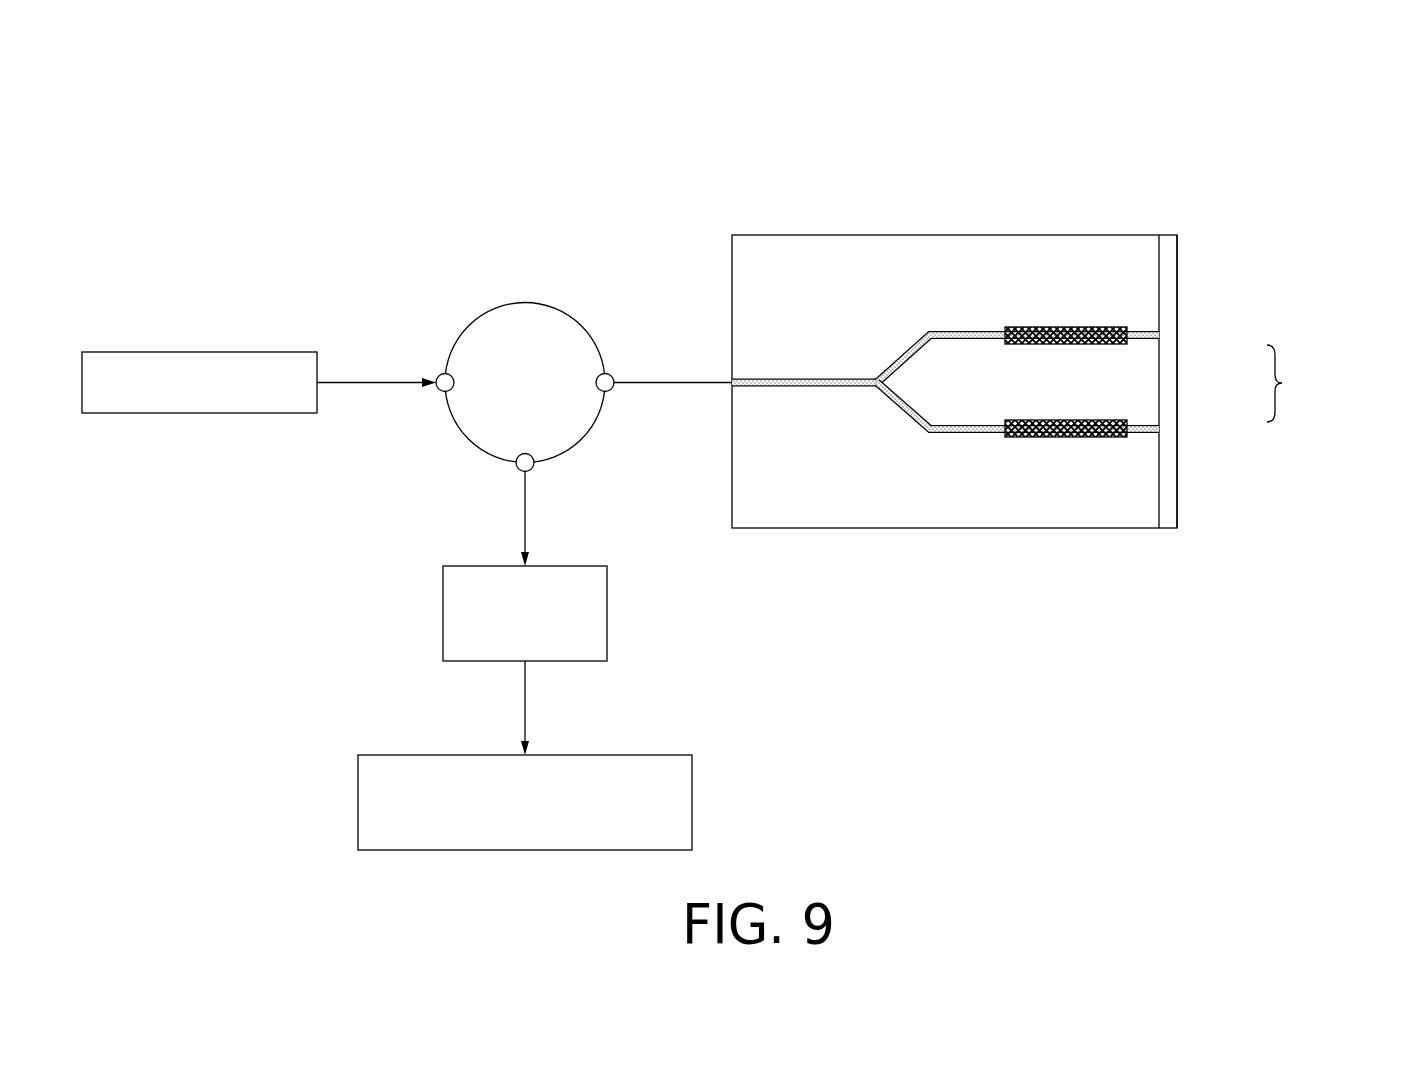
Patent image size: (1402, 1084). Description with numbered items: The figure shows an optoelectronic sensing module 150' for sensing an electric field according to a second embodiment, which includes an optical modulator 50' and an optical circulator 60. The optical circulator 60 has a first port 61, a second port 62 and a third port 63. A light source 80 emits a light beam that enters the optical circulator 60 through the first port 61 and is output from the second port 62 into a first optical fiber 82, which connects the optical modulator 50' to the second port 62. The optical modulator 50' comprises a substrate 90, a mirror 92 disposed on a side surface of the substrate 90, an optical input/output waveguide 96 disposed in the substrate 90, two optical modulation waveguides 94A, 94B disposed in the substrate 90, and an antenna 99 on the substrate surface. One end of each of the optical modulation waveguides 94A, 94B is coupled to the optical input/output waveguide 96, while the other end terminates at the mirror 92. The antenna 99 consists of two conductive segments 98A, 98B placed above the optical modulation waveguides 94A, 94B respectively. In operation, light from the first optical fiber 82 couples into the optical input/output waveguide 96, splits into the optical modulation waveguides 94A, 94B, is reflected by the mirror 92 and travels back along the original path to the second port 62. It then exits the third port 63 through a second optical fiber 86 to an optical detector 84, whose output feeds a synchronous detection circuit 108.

The optoelectronic sensing module 150' is at (1329, 121).
The optical modulator 50' is at (1153, 333).
The optical circulator 60 is at (525, 302).
The first port 61 is at (440, 392).
The second port 62 is at (609, 389).
The third port 63 is at (529, 469).
The light source 80 is at (200, 352).
The first optical fiber 82 is at (675, 382).
The optical detector 84 is at (607, 612).
The second optical fiber 86 is at (525, 505).
The substrate 90 is at (833, 235).
The mirror 92 is at (1168, 307).
The optical modulation waveguide 94A is at (947, 330).
The optical modulation waveguide 94B is at (947, 432).
The optical input/output waveguide 96 is at (773, 387).
The conductive segment 98A is at (1110, 343).
The conductive segment 98B is at (1110, 423).
The antenna 99 is at (1296, 383).
The synchronous detection circuit 108 is at (692, 803).